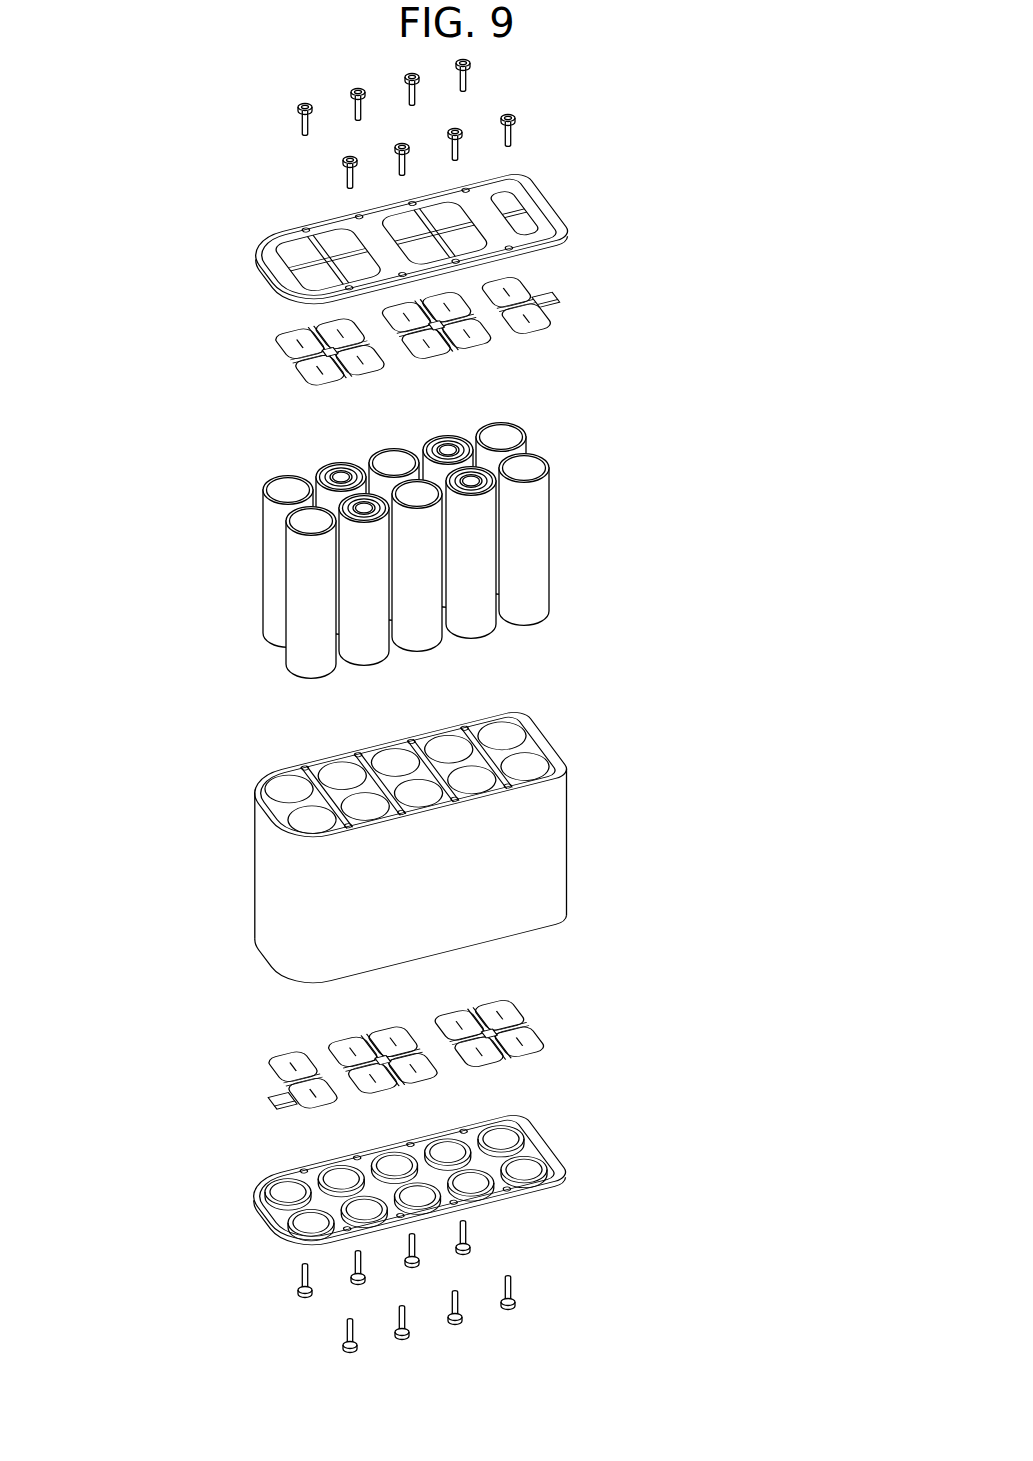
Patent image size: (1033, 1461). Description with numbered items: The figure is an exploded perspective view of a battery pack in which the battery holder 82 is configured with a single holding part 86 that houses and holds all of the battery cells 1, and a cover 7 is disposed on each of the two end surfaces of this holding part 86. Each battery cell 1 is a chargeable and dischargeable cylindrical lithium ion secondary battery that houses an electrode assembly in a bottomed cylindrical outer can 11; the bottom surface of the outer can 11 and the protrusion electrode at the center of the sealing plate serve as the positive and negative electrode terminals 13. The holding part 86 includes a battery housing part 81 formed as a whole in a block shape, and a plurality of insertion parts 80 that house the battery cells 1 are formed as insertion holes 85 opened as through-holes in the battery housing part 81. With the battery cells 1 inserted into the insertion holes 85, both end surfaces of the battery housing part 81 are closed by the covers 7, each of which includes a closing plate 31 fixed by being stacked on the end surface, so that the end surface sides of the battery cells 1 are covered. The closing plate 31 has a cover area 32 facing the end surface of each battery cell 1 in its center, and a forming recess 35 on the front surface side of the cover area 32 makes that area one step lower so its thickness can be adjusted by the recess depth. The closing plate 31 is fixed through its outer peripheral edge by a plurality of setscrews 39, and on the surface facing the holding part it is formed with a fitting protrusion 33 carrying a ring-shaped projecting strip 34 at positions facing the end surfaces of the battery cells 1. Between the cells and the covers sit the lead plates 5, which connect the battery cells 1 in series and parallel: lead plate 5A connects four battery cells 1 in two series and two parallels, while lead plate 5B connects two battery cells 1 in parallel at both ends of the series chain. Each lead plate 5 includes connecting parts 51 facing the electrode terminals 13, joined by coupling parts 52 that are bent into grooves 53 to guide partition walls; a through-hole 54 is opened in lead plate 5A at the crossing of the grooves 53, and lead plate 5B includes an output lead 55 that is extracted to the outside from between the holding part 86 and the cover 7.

The battery cell 1 is at (241, 561).
The outer can 11 is at (302, 662).
The electrode terminals 13 is at (447, 450).
The lead plate 5 is at (161, 960).
The lead plate 5A is at (180, 253).
The lead plate 5B is at (250, 1070).
The connecting parts 51 is at (296, 330).
The coupling part 52 is at (290, 356).
The groove 53 is at (285, 1080).
The through-hole 54 is at (380, 1058).
The output lead 55 is at (548, 295).
The cover 7 is at (592, 187).
The closing plate 31 is at (328, 222).
The cover area 32 is at (296, 252).
The fitting protrusion 33 is at (530, 1175).
The ring-shaped projecting strip 34 is at (565, 1165).
The forming recess 35 is at (260, 262).
The setscrews 39 is at (508, 112).
The insertion parts 80 is at (268, 782).
The insertion hole 85 is at (288, 789).
The battery housing part 81 is at (273, 858).
The battery holder 82 is at (722, 186).
The holding part 86 is at (606, 719).